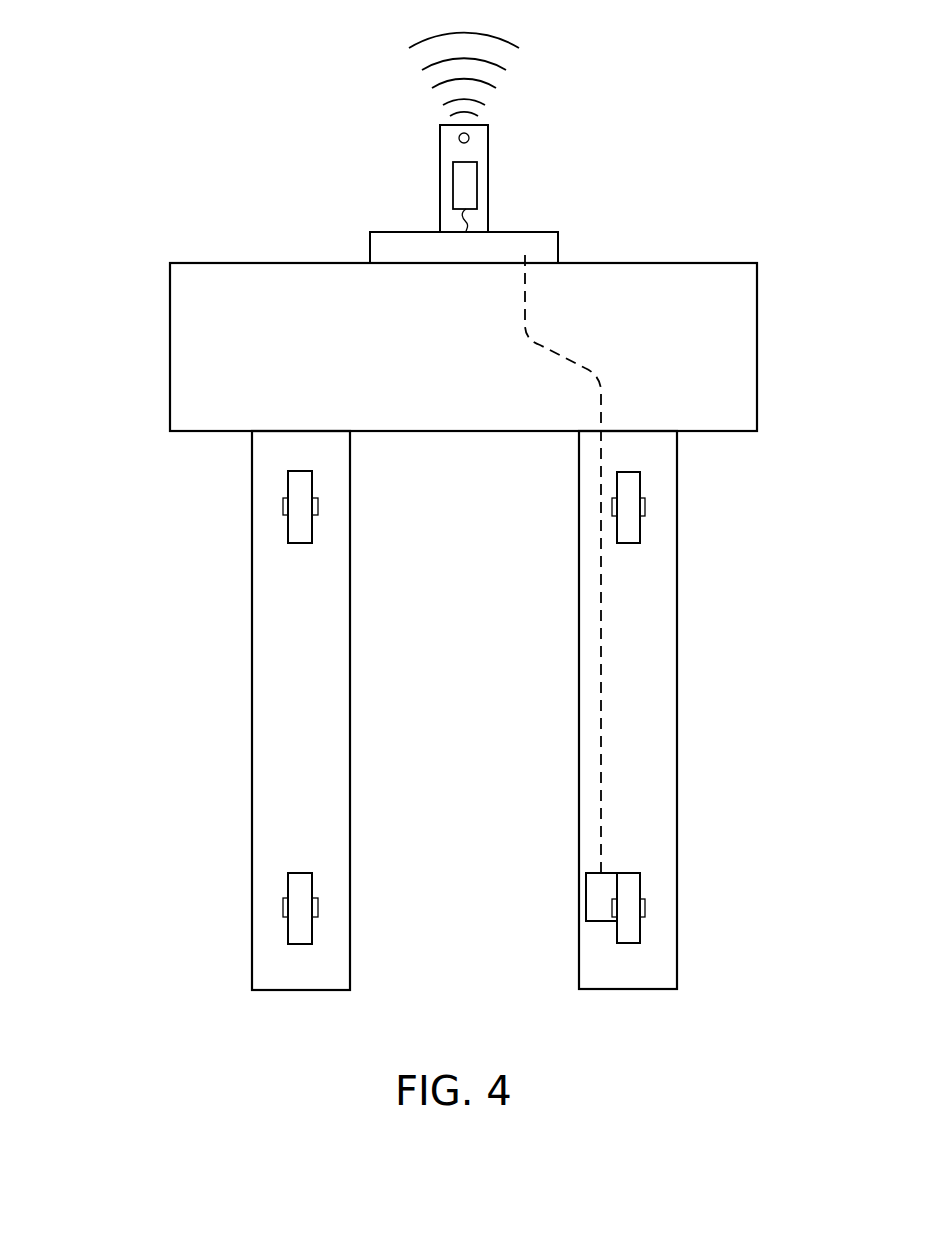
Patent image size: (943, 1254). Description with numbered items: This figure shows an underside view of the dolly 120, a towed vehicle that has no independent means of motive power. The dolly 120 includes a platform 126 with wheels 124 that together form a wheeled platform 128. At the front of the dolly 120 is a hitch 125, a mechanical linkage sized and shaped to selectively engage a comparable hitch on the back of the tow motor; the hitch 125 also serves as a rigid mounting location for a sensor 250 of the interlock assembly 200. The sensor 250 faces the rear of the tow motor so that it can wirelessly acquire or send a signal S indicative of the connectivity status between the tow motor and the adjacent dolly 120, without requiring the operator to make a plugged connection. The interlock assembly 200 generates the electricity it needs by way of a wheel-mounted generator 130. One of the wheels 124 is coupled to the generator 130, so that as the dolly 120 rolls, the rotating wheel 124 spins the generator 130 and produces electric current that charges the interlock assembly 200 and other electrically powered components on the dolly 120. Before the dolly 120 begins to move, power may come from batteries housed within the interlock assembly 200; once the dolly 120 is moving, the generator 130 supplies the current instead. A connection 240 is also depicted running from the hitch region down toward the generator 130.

The dolly 120 is at (463, 261).
The wheeled platform 128 is at (216, 710).
The platform 126 is at (650, 707).
The wheel 124 is at (640, 532).
The wheel-mounted generator 130 is at (586, 900).
The interlock assembly 200 is at (545, 232).
The cable 240 is at (600, 760).
The hitch 125 is at (482, 148).
The sensor 250 is at (452, 187).
The signal S is at (518, 64).